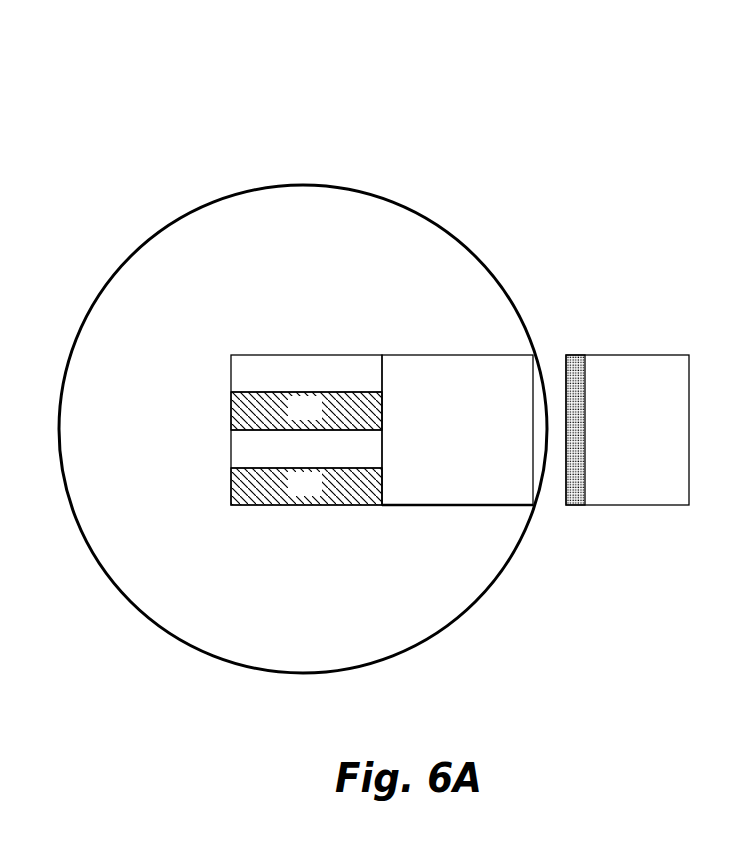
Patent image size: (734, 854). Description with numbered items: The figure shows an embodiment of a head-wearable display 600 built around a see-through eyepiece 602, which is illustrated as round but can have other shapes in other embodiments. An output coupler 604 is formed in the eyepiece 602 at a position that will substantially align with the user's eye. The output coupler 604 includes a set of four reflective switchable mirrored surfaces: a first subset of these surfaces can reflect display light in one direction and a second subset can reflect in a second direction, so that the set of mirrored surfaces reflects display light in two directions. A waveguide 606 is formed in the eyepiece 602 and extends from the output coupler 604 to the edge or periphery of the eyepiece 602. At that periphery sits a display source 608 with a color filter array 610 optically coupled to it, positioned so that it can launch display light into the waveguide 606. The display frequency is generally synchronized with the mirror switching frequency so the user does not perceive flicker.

The head-wearable display 600 is at (367, 91).
The eyepiece 602 is at (185, 613).
The output coupler 604 is at (223, 354).
The waveguide 606 is at (457, 430).
The display source 608 is at (627, 430).
The color filter array 610 is at (580, 483).